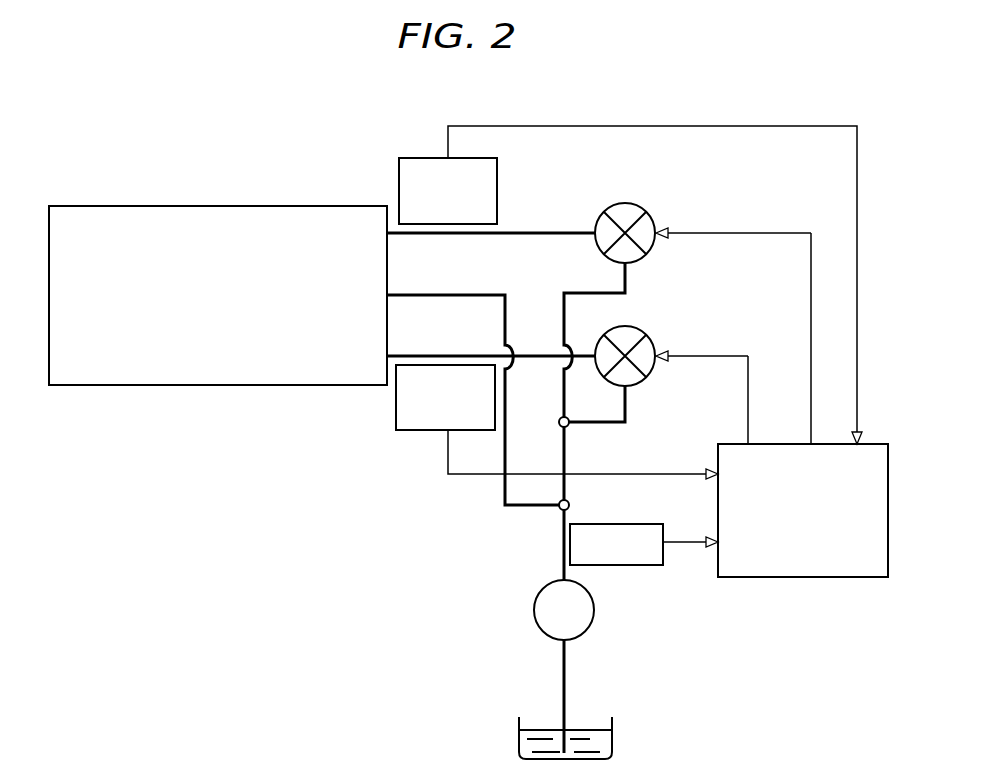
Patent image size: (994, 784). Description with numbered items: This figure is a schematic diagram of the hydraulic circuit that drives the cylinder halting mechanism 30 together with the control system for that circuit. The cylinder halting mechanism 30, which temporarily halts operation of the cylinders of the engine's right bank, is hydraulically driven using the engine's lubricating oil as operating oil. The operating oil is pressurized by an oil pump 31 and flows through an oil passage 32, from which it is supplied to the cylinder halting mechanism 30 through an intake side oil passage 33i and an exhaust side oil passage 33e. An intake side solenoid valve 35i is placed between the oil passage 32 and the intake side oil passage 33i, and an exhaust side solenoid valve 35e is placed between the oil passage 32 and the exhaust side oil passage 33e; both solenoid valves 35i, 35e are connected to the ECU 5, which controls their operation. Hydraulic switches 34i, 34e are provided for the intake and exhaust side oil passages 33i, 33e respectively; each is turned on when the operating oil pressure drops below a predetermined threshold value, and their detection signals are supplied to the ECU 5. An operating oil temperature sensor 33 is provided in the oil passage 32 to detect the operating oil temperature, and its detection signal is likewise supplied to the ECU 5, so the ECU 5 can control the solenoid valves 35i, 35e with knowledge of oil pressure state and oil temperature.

The cylinder halting mechanism 30 is at (231, 206).
The oil pump 31 is at (534, 607).
The oil passage 32 is at (567, 452).
The operating oil temperature sensor 33 is at (640, 565).
The intake side oil passage 33i is at (543, 231).
The exhaust side oil passage 33e is at (536, 354).
The hydraulic switch 34i is at (399, 173).
The hydraulic switch 34e is at (396, 406).
The intake side solenoid valve 35i is at (647, 212).
The exhaust side solenoid valve 35e is at (647, 335).
The ECU 5 is at (806, 577).